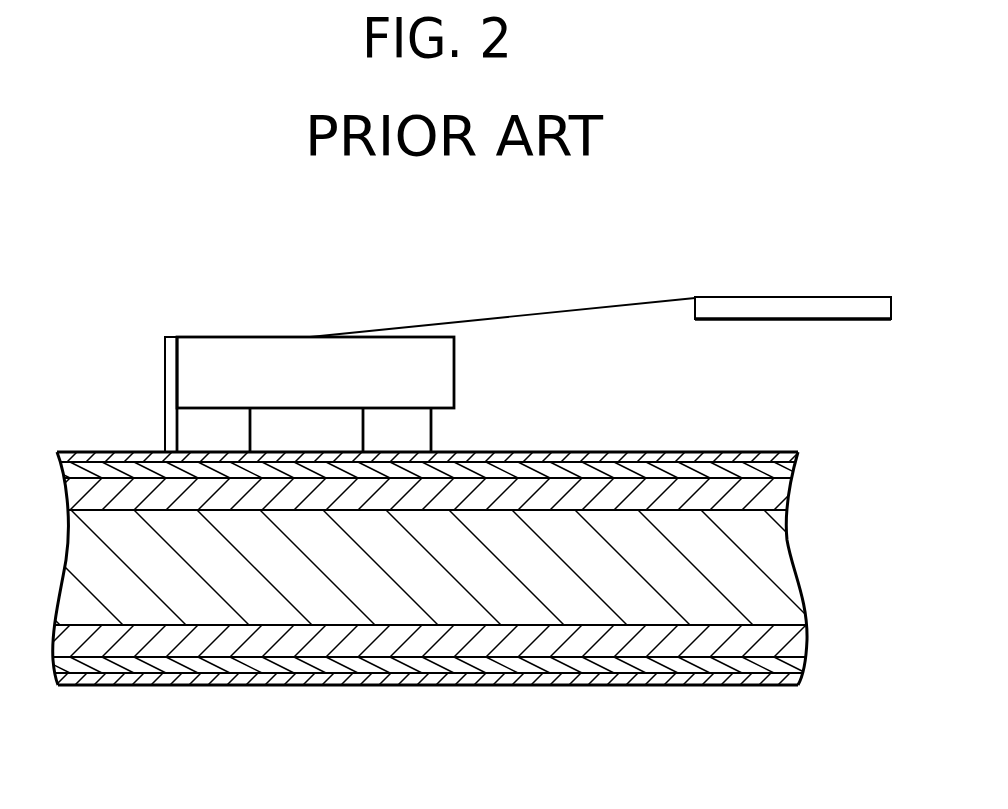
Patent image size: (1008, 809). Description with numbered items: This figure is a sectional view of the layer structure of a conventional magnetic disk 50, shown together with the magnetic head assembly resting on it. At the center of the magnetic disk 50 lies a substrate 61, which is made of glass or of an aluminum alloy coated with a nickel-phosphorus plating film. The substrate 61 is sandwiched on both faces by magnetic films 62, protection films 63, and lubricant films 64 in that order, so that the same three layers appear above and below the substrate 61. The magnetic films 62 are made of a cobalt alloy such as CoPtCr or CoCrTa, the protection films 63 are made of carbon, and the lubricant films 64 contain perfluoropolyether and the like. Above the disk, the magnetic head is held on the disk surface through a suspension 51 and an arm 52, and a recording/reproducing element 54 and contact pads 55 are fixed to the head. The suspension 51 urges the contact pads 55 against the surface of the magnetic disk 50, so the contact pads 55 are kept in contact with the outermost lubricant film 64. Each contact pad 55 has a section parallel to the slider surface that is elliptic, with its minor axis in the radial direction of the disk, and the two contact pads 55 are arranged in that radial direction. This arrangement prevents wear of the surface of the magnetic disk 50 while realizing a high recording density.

The magnetic disk 50 is at (160, 683).
The suspension 51 is at (530, 312).
The arm 52 is at (840, 297).
The recording/reproducing element 54 is at (168, 387).
The contact pads 55 is at (432, 433).
The substrate 61 is at (792, 557).
The magnetic films 62 is at (790, 497).
The protection films 63 is at (790, 472).
The lubricant films 64 is at (798, 453).